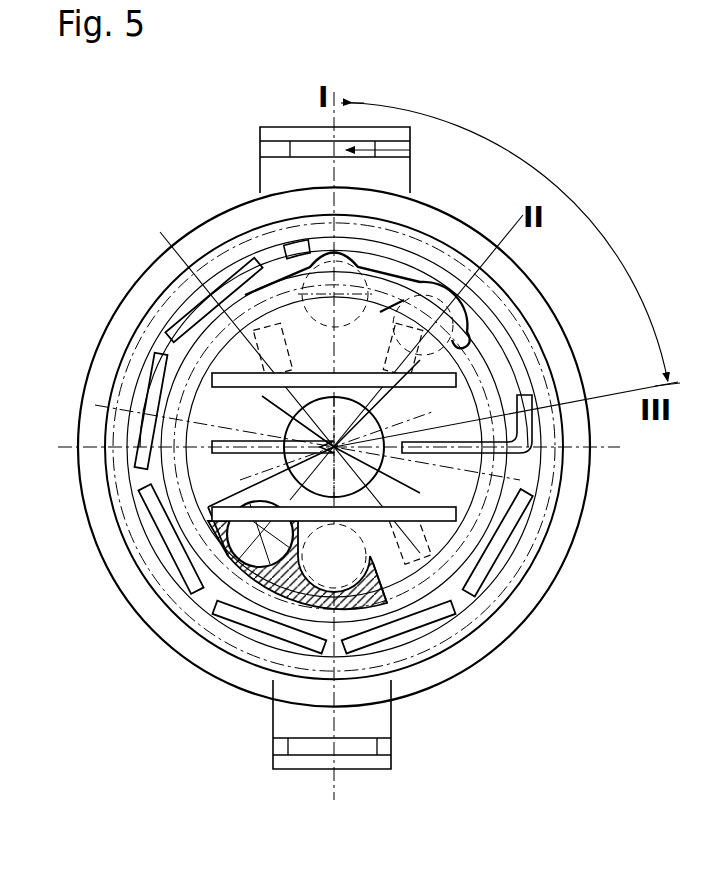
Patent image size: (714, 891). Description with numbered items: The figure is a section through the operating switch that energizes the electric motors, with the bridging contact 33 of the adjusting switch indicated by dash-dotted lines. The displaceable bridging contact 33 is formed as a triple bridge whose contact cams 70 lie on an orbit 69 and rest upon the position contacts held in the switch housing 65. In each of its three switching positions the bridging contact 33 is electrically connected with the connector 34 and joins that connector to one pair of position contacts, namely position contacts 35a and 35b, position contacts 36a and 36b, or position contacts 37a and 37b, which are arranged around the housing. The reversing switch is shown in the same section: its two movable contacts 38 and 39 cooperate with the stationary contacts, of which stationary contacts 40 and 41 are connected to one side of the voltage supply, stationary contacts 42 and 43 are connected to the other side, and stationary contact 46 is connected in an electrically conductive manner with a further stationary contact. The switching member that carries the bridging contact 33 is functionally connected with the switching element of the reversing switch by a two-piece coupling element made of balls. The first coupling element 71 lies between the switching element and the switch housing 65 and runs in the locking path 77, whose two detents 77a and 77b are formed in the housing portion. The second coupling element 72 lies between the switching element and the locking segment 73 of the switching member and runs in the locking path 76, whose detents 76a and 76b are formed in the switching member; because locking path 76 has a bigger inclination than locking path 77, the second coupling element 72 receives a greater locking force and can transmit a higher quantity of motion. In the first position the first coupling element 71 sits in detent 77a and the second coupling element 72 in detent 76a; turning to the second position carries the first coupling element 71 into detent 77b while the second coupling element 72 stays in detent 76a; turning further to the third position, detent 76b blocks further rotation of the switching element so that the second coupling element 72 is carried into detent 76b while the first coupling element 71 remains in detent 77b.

The bridging contact 33 is at (222, 290).
The connector 34 is at (513, 353).
The position contact 35a is at (524, 580).
The position contact 35b is at (152, 532).
The position contact 36a is at (455, 640).
The position contact 36b is at (142, 441).
The position contact 37a is at (228, 608).
The position contact 37b is at (148, 296).
The movable contact 38 is at (236, 455).
The movable contact 39 is at (528, 398).
The stationary contact 40 is at (334, 447).
The stationary contact 41 is at (317, 447).
The stationary contact 42 is at (306, 374).
The stationary contact 43 is at (360, 335).
The stationary contact 46 is at (283, 434).
The switch housing 65 is at (473, 244).
The orbit 69 is at (253, 237).
The contact cams 70 is at (323, 236).
The first coupling element 71 is at (402, 266).
The second coupling element 72 is at (206, 599).
The locking segment 73 is at (396, 618).
The locking path 76 is at (300, 602).
The detent 76a is at (412, 480).
The detent 76b is at (212, 555).
The locking path 77 is at (468, 330).
The detent 77a is at (432, 262).
The detent 77b is at (490, 340).